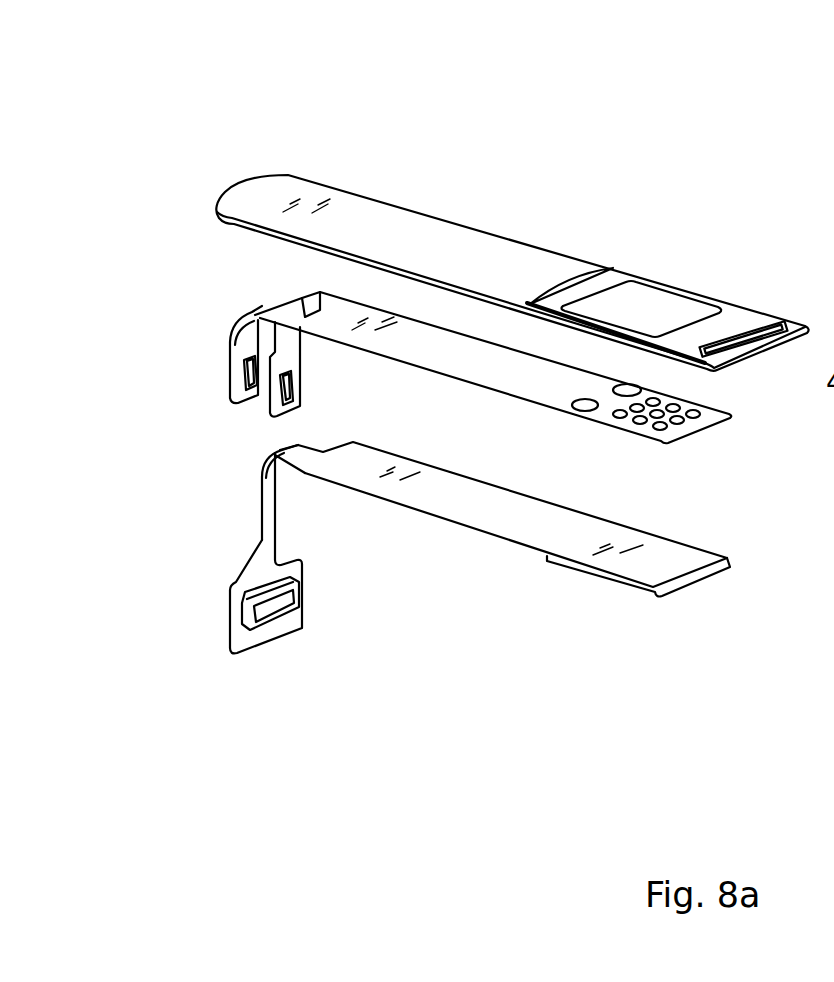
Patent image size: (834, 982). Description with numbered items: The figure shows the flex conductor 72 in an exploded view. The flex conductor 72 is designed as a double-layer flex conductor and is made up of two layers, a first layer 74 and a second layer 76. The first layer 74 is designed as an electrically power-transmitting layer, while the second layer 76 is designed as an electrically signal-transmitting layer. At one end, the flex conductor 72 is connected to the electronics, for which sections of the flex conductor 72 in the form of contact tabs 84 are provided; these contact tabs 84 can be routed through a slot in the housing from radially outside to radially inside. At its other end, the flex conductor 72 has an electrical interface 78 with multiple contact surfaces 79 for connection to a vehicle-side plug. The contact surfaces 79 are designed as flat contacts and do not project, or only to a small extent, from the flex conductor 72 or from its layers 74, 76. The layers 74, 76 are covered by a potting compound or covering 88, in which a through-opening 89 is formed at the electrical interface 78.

The flex conductor 72 is at (615, 640).
The first layer 74 is at (510, 247).
The second layer 76 is at (487, 508).
The electrical interface 78 is at (715, 443).
The contact surfaces 79 is at (675, 405).
The contact tabs 84 is at (260, 410).
The covering 88 is at (363, 225).
The through-opening 89 is at (637, 312).